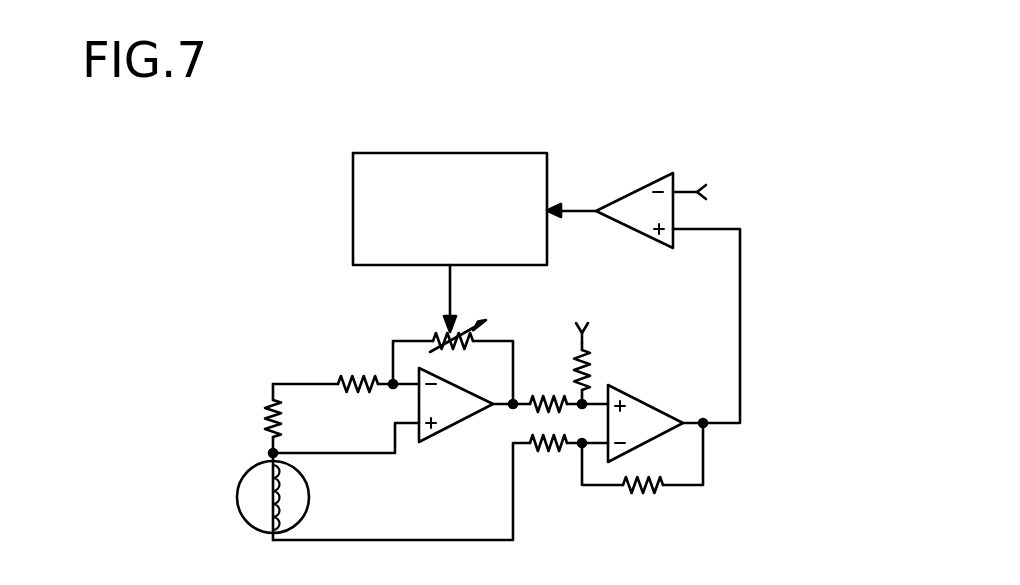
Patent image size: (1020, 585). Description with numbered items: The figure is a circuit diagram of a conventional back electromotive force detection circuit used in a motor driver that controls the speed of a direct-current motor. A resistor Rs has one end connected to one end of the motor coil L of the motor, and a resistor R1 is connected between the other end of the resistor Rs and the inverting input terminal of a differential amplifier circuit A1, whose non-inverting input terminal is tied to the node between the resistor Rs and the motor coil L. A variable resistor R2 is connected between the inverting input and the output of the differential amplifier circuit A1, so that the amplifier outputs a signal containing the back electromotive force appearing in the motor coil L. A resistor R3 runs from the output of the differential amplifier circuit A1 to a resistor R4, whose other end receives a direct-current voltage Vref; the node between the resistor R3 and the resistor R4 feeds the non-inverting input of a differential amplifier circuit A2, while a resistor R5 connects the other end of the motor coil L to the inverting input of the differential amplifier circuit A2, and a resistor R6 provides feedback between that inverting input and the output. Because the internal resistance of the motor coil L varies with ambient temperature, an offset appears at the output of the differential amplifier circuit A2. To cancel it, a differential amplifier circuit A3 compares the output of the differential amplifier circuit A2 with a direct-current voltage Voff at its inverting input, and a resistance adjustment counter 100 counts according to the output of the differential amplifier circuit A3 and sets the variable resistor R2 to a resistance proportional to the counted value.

The resistance adjustment counter 100 is at (520, 153).
The differential amplifier circuit A1 is at (460, 421).
The differential amplifier circuit A2 is at (657, 404).
The differential amplifier circuit A3 is at (631, 230).
The resistor R1 is at (346, 370).
The variable resistor R2 is at (453, 362).
The resistor R3 is at (550, 393).
The resistor R4 is at (602, 373).
The resistor R5 is at (569, 458).
The resistor R6 is at (644, 472).
The resistor Rs is at (254, 420).
The motor coil L is at (238, 497).
The direct-current voltage Vref is at (614, 329).
The direct-current voltage Voff is at (719, 194).